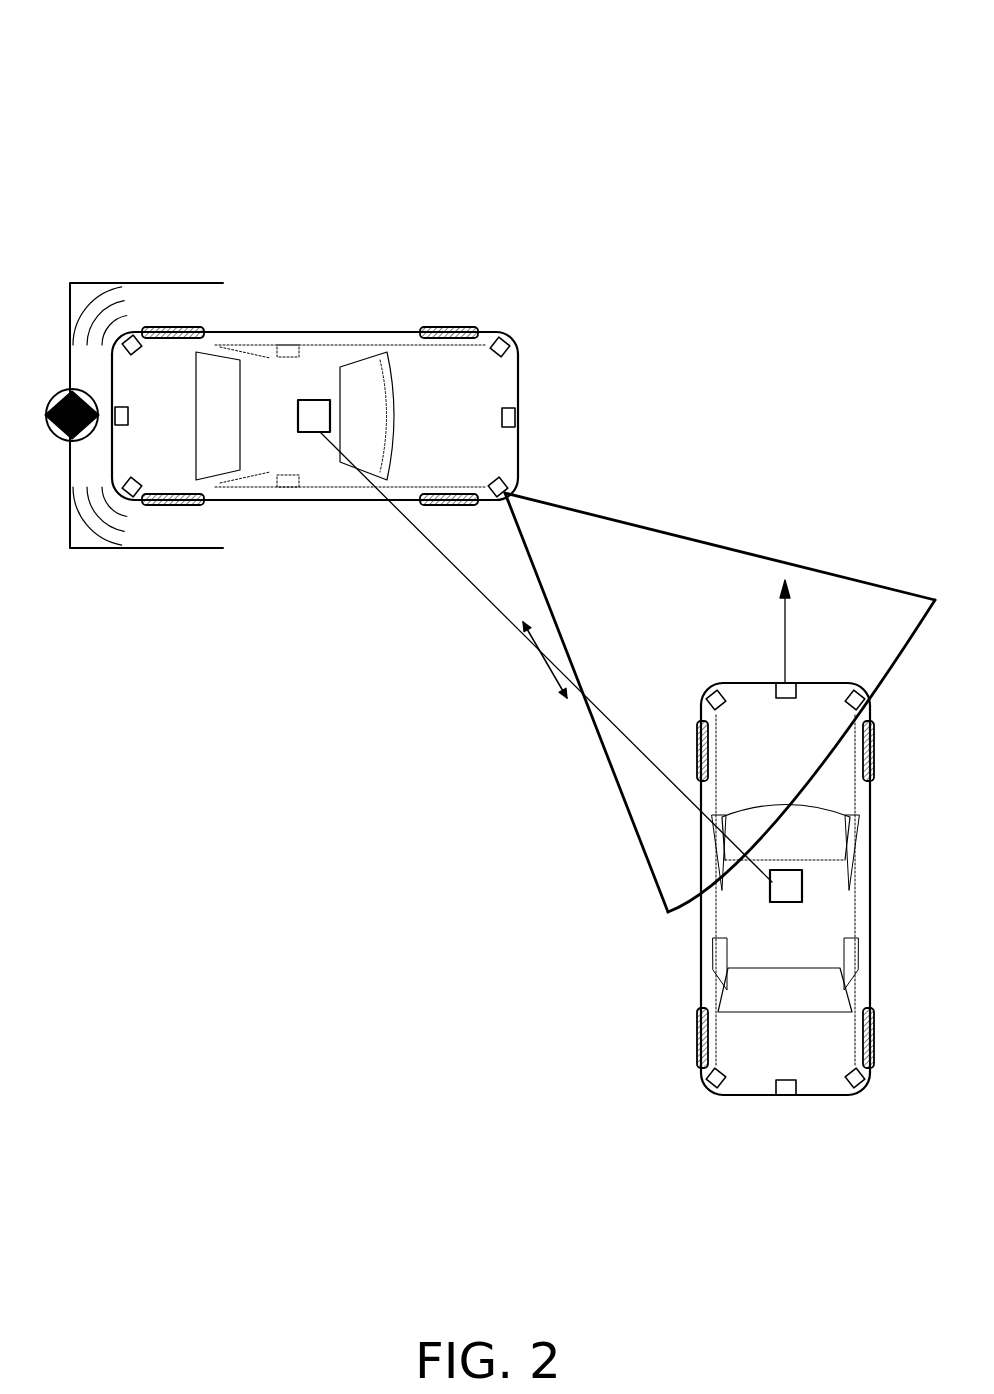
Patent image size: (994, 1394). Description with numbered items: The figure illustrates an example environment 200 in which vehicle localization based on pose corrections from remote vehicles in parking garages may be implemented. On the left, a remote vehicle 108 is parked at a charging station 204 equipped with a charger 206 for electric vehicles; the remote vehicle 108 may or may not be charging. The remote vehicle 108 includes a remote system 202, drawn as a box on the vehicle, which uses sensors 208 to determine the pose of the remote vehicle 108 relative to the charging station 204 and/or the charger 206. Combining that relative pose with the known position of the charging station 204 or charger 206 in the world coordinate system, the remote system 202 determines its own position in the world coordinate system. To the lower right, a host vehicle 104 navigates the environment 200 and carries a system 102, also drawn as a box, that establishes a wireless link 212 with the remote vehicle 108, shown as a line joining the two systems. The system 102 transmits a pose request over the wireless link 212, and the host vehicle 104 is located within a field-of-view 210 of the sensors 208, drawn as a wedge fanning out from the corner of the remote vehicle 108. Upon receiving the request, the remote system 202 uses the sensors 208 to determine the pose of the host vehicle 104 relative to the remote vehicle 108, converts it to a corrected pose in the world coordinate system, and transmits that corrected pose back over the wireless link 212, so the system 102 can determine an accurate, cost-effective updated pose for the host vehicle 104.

The environment 200 is at (833, 43).
The remote system 202 is at (312, 400).
The charging station 204 is at (158, 282).
The charger 206 is at (74, 440).
The sensors 208 is at (505, 490).
The remote vehicle 108 is at (517, 373).
The host vehicle 104 is at (702, 923).
The system 102 is at (802, 893).
The field-of-view 210 is at (599, 737).
The wireless link 212 is at (507, 635).